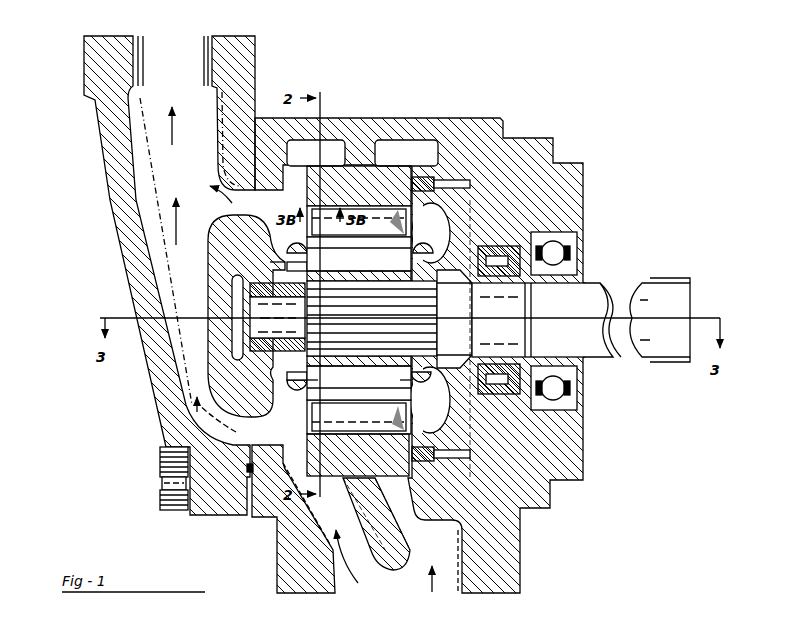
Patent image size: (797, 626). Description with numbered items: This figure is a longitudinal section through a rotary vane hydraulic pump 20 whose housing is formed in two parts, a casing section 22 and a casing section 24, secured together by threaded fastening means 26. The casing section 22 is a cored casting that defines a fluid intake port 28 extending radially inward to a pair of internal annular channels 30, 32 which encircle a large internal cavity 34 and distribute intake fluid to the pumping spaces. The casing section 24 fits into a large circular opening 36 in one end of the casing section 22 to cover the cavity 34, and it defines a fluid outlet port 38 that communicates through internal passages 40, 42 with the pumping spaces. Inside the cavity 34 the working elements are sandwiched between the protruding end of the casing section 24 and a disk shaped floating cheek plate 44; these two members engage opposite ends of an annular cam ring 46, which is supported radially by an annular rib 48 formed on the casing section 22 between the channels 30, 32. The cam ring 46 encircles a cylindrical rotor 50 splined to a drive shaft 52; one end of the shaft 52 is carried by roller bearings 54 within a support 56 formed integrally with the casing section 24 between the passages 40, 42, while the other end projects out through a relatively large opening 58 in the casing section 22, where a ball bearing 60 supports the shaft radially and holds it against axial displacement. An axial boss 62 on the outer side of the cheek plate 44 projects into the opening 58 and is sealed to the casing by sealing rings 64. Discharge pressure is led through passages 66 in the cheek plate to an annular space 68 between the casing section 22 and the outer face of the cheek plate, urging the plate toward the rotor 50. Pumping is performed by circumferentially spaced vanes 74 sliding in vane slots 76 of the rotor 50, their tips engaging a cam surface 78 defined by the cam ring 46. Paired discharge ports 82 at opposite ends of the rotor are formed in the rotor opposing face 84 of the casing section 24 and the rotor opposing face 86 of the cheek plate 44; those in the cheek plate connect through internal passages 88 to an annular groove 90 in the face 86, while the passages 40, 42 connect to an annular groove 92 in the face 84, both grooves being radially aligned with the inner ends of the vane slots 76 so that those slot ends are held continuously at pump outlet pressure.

The pump 20 is at (105, 230).
The casing section 22 is at (570, 440).
The casing section 24 is at (138, 275).
The threaded fastening means 26 is at (168, 462).
The fluid intake port 28 is at (393, 582).
The internal annular channel 30 is at (300, 150).
The internal annular channel 32 is at (400, 152).
The internal cavity 34 is at (355, 475).
The circular opening 36 is at (247, 467).
The fluid outlet port 38 is at (172, 68).
The internal passage 40 is at (273, 242).
The internal passage 42 is at (273, 383).
The floating cheek plate 44 is at (450, 428).
The cam ring 46 is at (388, 465).
The annular rib 48 is at (356, 165).
The rotor 50 is at (366, 358).
The drive shaft 52 is at (605, 290).
The roller bearings 54 is at (250, 291).
The support 56 is at (220, 266).
The opening 58 is at (535, 228).
The ball bearing 60 is at (565, 401).
The axial boss 62 is at (500, 412).
The sealing rings 64 is at (508, 230).
The passages 66 is at (458, 462).
The annular space 68 is at (474, 453).
The pumping vanes 74 is at (333, 226).
The vane slots 76 is at (372, 270).
The cam surface 78 is at (366, 205).
The discharge ports 82 is at (305, 208).
The rotor opposing face 84 is at (307, 387).
The rotor opposing face 86 is at (411, 392).
The internal passages 88 is at (436, 262).
The annular groove 90 is at (430, 277).
The annular groove 92 is at (270, 266).